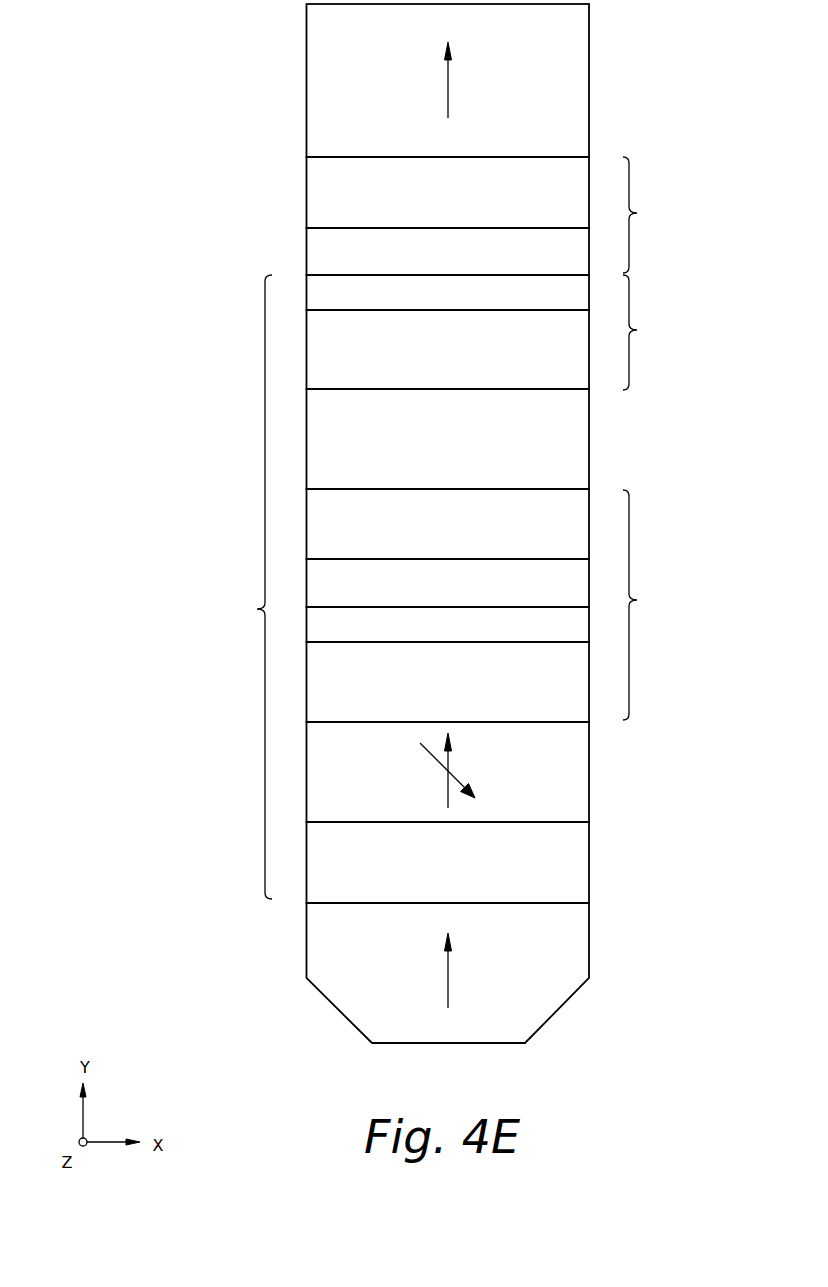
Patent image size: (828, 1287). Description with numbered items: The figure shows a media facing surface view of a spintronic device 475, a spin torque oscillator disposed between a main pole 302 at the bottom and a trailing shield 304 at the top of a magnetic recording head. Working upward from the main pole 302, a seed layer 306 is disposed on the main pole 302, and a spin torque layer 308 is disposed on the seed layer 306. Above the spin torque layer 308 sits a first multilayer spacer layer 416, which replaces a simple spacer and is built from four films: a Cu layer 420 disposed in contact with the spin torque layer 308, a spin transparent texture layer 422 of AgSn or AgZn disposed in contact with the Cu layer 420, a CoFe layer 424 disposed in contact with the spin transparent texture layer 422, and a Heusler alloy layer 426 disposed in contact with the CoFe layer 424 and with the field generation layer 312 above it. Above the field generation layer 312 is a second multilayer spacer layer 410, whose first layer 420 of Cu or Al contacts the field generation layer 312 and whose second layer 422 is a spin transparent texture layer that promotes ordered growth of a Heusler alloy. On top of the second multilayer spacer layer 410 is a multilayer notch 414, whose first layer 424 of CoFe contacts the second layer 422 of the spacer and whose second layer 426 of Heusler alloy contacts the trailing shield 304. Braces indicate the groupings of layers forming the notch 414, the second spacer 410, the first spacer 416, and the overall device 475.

The main pole 302 is at (557, 964).
The trailing shield 304 is at (556, 96).
The seed layer 306 is at (423, 877).
The spin torque layer 308 is at (557, 787).
The field generation layer 312 is at (423, 459).
The second multilayer spacer layer 410 is at (652, 332).
The multilayer notch 414 is at (652, 215).
The first multilayer spacer layer 416 is at (652, 605).
The first layer 420 is at (423, 362).
The second layer 422 is at (423, 303).
The first layer 424 is at (423, 262).
The second layer 426 is at (423, 204).
The spintronic device 475 is at (242, 587).